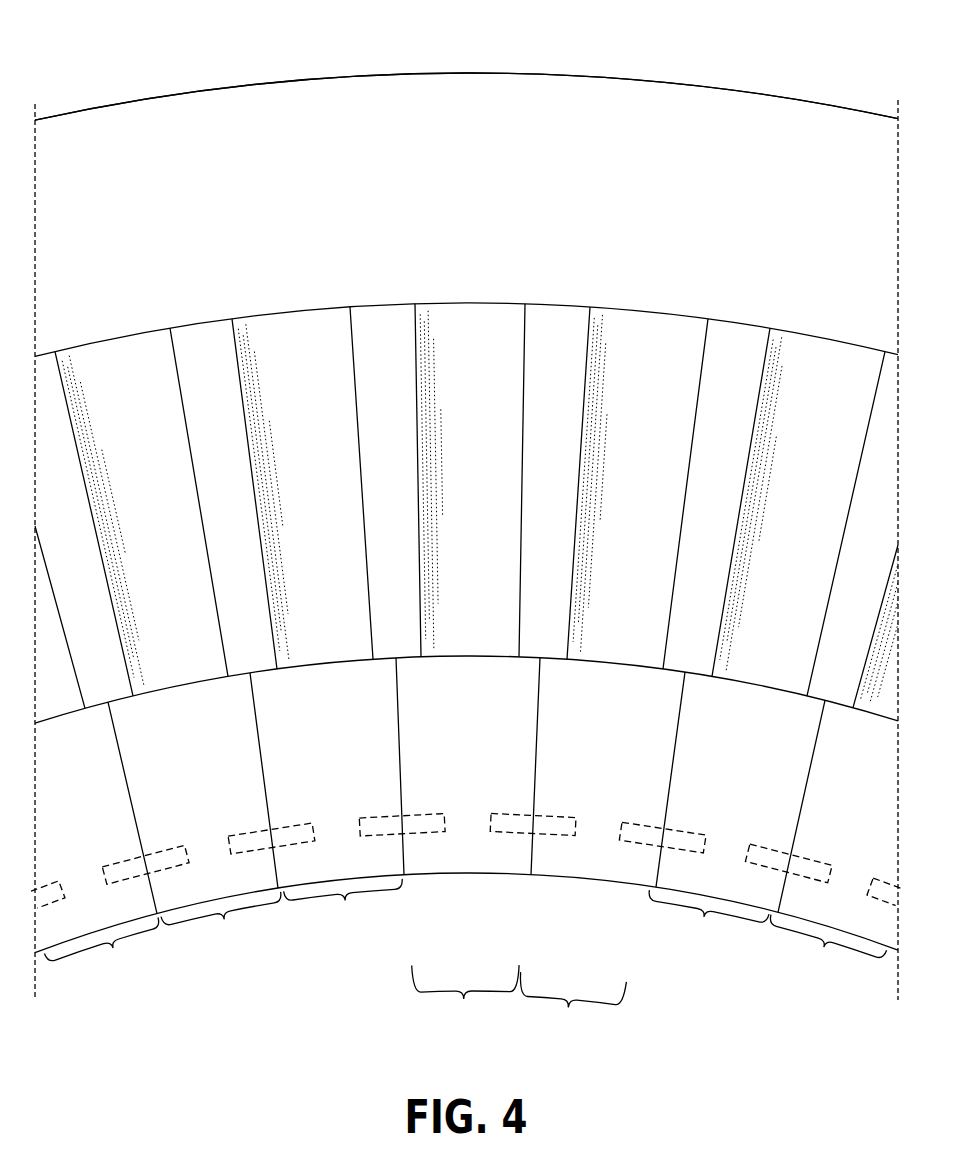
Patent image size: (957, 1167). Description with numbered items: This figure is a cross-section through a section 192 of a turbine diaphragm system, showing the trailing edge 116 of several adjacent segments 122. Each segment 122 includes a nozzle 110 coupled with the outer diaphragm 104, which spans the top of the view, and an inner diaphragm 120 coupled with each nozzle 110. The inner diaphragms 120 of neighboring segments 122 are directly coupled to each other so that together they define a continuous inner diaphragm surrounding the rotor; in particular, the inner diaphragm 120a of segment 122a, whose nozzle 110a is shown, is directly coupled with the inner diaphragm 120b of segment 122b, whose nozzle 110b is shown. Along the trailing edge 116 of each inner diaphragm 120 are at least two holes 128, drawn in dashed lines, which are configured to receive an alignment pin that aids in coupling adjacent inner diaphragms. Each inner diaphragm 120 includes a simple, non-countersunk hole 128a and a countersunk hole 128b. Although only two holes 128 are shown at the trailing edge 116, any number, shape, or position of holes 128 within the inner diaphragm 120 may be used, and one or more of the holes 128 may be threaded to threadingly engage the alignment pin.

The outer diaphragm 104 is at (449, 205).
The nozzle 110 is at (817, 500).
The nozzle 110a is at (513, 500).
The nozzle 110b is at (671, 502).
The trailing edge 116 is at (147, 591).
The inner diaphragm 120 is at (884, 804).
The inner diaphragm 120a is at (413, 742).
The inner diaphragm 120b is at (556, 760).
The segment 122 is at (465, 933).
The segment 122a is at (469, 998).
The segment 122b is at (590, 1007).
The hole 128 is at (476, 884).
The non-countersunk hole 128a is at (634, 840).
The countersunk hole 128b is at (555, 834).
The section 192 is at (68, 90).